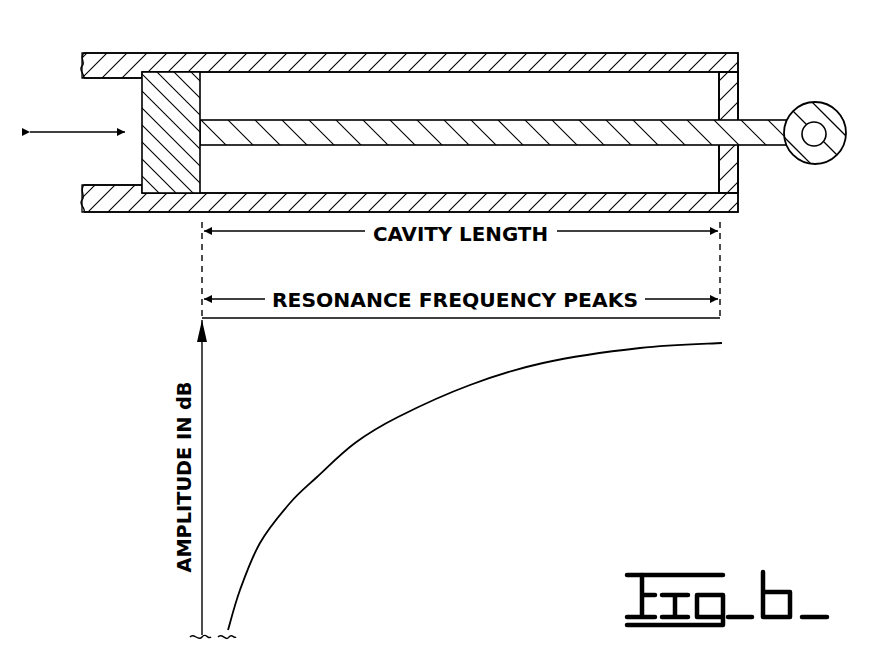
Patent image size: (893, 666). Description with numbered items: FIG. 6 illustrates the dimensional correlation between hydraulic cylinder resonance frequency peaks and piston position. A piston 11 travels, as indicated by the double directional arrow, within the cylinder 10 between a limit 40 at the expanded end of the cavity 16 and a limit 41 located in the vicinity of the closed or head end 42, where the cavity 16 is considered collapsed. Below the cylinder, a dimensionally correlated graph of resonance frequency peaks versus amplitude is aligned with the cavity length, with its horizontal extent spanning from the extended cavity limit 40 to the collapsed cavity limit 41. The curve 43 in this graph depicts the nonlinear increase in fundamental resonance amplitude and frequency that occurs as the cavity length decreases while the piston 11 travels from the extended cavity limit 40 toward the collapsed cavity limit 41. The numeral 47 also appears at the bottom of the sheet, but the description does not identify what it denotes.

The cylinder 10 is at (178, 88).
The piston 11 is at (142, 118).
The cavity 16 is at (584, 92).
The limit at the expanded end of the cavity 40 is at (202, 290).
The limit in the vicinity of the closed or head end 41 is at (720, 262).
The closed or head end 42 is at (730, 93).
The curve 43 is at (543, 363).
The frequency axis 47 is at (500, 664).